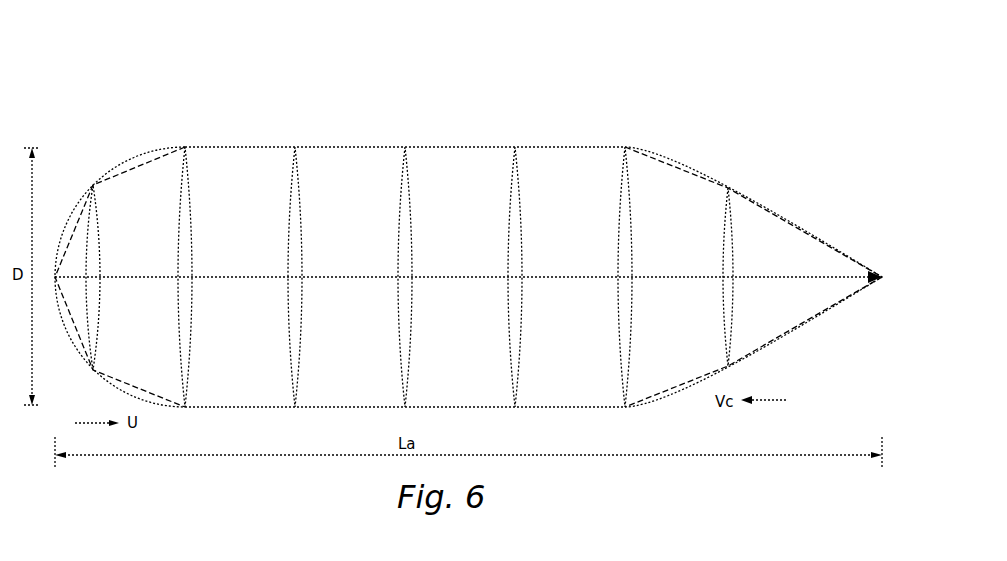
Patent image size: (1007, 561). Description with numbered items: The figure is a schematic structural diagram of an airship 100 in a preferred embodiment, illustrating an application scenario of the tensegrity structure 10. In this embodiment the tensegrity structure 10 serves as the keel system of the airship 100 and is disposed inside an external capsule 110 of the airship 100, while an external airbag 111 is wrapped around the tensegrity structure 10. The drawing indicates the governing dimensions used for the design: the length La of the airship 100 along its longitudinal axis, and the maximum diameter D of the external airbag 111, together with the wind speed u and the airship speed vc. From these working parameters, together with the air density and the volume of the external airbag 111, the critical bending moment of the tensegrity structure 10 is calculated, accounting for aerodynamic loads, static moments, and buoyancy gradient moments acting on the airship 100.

The airship 100 is at (468, 217).
The external capsule 110 is at (690, 163).
The external airbag 111 is at (134, 158).
The tensegrity structure 10 is at (733, 221).